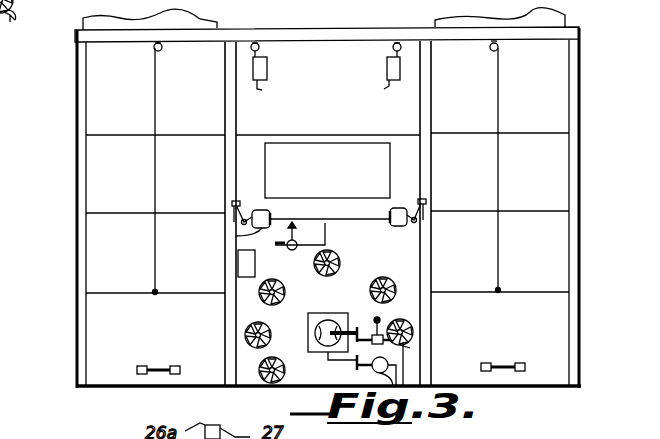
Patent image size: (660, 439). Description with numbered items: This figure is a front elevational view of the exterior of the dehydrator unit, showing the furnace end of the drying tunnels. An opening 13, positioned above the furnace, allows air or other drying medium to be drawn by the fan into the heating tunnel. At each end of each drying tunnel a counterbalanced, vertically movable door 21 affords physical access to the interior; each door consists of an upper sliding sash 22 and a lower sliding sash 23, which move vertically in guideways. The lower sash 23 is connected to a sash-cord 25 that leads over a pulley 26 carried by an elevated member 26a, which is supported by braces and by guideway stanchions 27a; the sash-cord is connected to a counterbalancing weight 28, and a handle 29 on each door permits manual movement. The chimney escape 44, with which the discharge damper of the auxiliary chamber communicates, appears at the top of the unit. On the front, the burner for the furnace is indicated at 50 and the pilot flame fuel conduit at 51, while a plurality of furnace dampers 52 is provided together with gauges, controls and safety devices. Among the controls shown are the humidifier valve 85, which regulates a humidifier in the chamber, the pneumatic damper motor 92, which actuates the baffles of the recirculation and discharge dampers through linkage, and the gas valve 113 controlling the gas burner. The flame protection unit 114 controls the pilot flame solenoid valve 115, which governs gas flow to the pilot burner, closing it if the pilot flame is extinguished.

The opening 13 is at (338, 179).
The door 21 is at (104, 277).
The upper sliding sash 22 is at (142, 260).
The lower sliding sash 23 is at (167, 336).
The sash-cord 25 is at (156, 110).
The pulley 26 is at (161, 52).
The elevated member 26a is at (318, 39).
The guideway stanchions 27a is at (80, 175).
The counterbalancing weight 28 is at (326, 76).
The handle 29 is at (155, 366).
The chimney escape 44 is at (219, 23).
The burner 50 is at (328, 320).
The pilot flame fuel conduit 51 is at (340, 362).
The furnace dampers 52 is at (340, 263).
The humidifier valve 85 is at (298, 231).
The pneumatic damper motor 92 is at (258, 232).
The gas valve 113 is at (375, 324).
The flame protection unit 114 is at (242, 264).
The pilot flame solenoid valve 115 is at (410, 348).